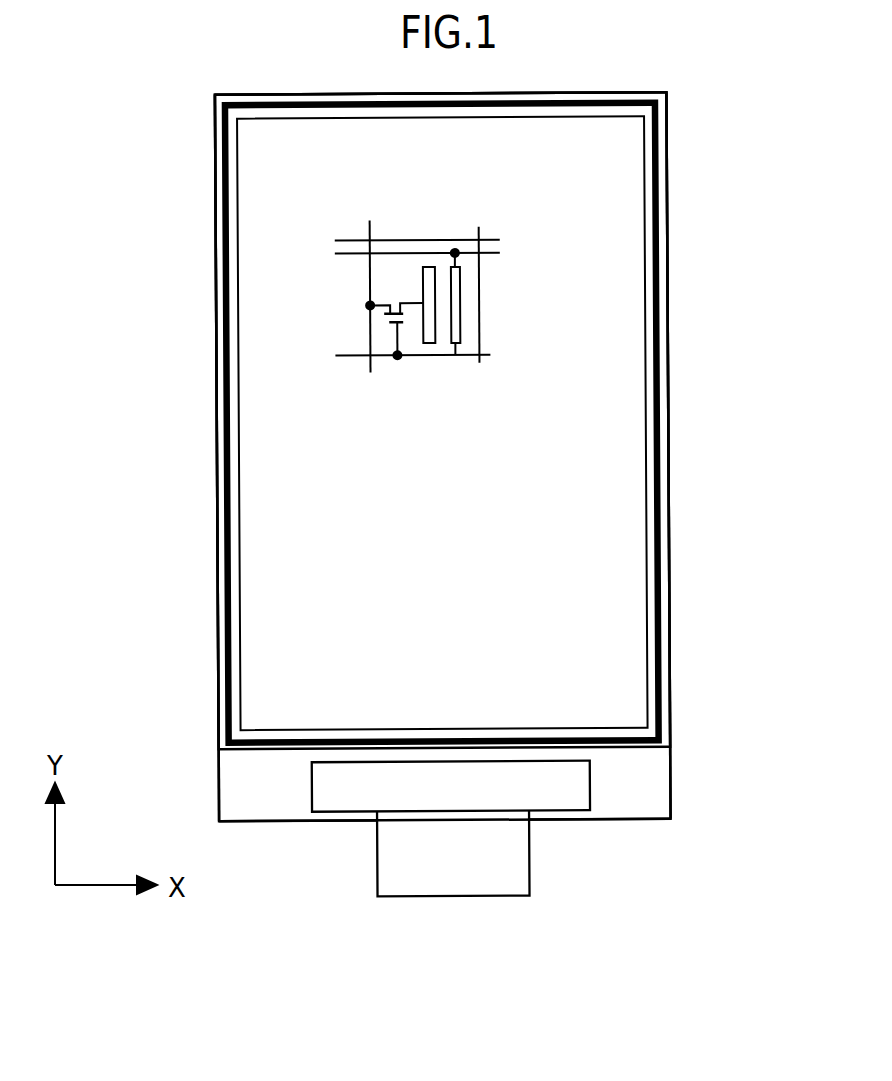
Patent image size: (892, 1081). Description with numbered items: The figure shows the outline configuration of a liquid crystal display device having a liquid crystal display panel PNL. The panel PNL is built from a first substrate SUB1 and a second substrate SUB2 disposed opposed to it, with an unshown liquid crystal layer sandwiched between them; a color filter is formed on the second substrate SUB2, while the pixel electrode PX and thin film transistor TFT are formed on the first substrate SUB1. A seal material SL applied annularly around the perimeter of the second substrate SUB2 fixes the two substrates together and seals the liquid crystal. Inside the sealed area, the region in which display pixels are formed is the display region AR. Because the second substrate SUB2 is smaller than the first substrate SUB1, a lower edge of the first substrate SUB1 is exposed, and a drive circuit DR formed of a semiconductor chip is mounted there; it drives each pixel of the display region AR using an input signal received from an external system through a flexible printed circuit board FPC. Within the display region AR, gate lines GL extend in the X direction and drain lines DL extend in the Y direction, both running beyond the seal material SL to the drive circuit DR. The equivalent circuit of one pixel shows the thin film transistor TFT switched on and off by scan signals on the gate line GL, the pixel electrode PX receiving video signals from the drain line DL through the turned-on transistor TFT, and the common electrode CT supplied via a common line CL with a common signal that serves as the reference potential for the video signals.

The liquid crystal display panel PNL is at (678, 183).
The display region AR is at (637, 340).
The seal material SL is at (662, 495).
The second substrate SUB2 is at (669, 582).
The first substrate SUB1 is at (667, 790).
The flexible printed circuit board FPC is at (526, 845).
The drive circuit DR is at (331, 807).
The common line CL is at (357, 250).
The gate line GL is at (407, 240).
The drain line DL is at (478, 237).
The thin film transistor TFT is at (380, 323).
The pixel electrode PX is at (430, 343).
The common electrode CT is at (457, 345).